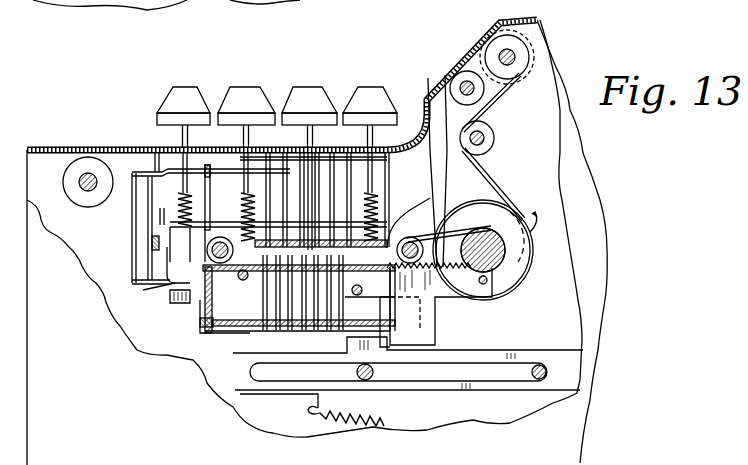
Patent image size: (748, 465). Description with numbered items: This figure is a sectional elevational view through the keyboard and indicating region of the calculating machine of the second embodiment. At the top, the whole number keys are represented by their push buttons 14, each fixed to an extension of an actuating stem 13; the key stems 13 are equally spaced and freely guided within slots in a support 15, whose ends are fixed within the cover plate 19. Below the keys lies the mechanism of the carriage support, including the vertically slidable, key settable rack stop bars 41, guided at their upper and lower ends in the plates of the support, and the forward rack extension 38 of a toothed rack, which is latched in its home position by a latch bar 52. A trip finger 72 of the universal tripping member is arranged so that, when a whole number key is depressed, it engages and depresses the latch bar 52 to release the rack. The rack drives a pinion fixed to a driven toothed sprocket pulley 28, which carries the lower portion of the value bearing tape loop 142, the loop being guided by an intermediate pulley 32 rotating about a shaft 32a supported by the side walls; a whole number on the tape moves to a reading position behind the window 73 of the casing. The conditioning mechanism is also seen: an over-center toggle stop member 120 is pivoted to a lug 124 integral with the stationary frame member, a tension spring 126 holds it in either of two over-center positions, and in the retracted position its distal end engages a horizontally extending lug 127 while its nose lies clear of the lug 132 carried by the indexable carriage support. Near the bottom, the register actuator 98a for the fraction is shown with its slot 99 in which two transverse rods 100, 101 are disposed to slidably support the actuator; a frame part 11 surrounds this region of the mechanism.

The frame with rack 11 is at (443, 301).
The actuating stem 13 is at (347, 188).
The push button 14 is at (240, 100).
The support 15 is at (373, 243).
The cover plate 19 is at (90, 147).
The sprocket pulley 28 is at (517, 222).
The intermediate pulley 32 is at (494, 138).
The shaft 32a is at (482, 91).
The rack extension 38 is at (250, 311).
The rack stop bar 41 is at (313, 332).
The latch bar 52 is at (200, 312).
The trip finger 72 is at (208, 213).
The window 73 is at (467, 48).
The register actuator 98a is at (553, 383).
The slot 99 is at (445, 378).
The transverse rod 100 is at (370, 381).
The transverse rod 101 is at (565, 343).
The stop member 120 is at (163, 258).
The lug 124 is at (163, 297).
The tension spring 126 is at (152, 243).
The lug 127 is at (165, 222).
The lug 132 is at (170, 283).
The value bearing tape loop 142 is at (437, 174).